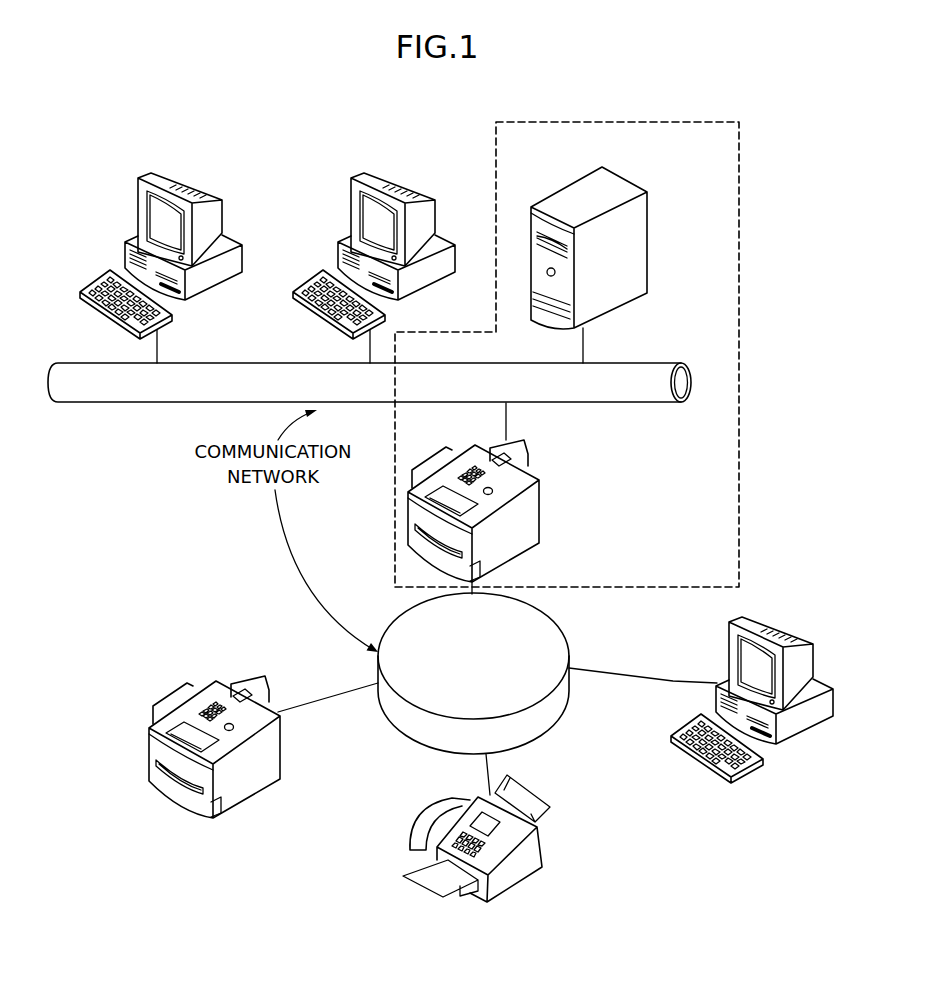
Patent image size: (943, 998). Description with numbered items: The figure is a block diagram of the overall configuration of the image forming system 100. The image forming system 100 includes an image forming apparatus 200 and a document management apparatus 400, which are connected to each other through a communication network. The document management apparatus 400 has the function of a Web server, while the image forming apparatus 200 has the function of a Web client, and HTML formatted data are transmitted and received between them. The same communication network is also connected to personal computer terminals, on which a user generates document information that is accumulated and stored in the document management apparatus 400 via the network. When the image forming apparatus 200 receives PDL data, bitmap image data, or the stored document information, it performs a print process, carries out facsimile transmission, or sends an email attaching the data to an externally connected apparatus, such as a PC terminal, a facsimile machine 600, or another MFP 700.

The image forming system 100 is at (742, 153).
The image forming apparatus 200 is at (541, 505).
The document management apparatus 400 is at (622, 182).
The facsimile machine 600 is at (542, 847).
The another MFP 700 is at (148, 752).